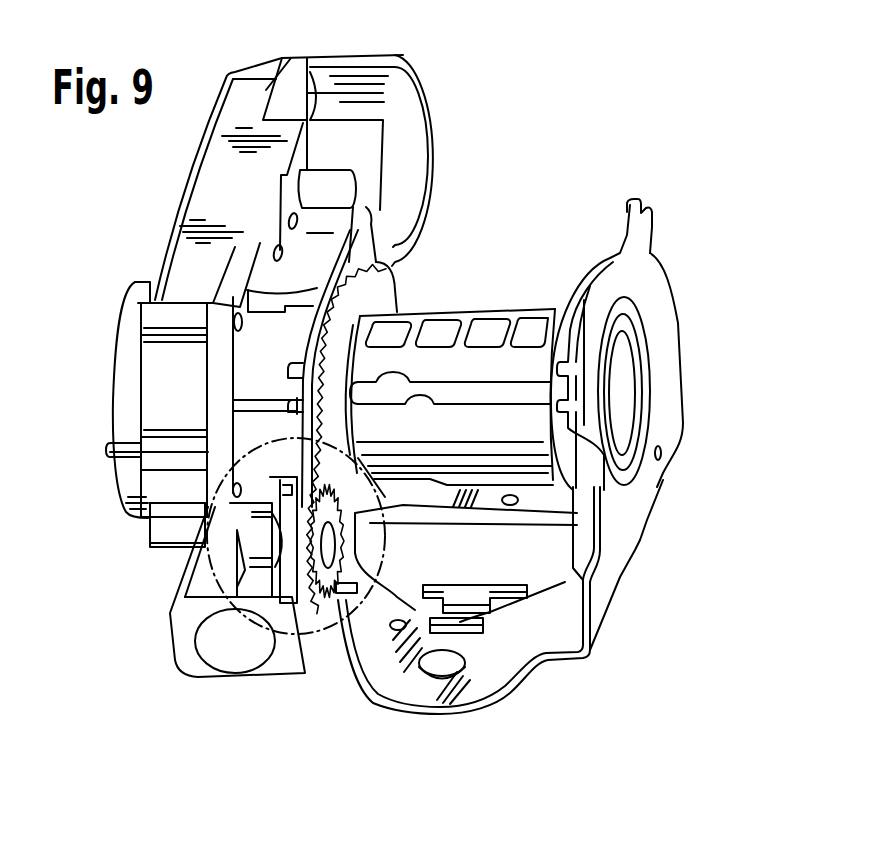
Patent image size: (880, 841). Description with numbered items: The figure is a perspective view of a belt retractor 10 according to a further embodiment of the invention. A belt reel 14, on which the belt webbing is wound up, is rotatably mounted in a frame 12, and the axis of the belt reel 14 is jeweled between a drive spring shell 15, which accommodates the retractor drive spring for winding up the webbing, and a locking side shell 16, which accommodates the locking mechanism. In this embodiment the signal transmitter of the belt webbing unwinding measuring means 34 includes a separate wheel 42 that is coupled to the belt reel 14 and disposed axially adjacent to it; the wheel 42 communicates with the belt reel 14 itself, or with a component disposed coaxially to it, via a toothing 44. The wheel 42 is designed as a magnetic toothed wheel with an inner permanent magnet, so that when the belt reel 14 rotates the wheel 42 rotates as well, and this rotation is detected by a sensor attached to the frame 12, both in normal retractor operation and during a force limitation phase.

The belt retractor 10 is at (598, 136).
The frame 12 is at (480, 678).
The belt reel 14 is at (487, 368).
The drive spring shell 15 is at (123, 386).
The locking side shell 16 is at (687, 370).
The belt webbing unwinding measuring means 34 is at (276, 588).
The wheel 42 is at (345, 577).
The toothing 44 is at (372, 252).